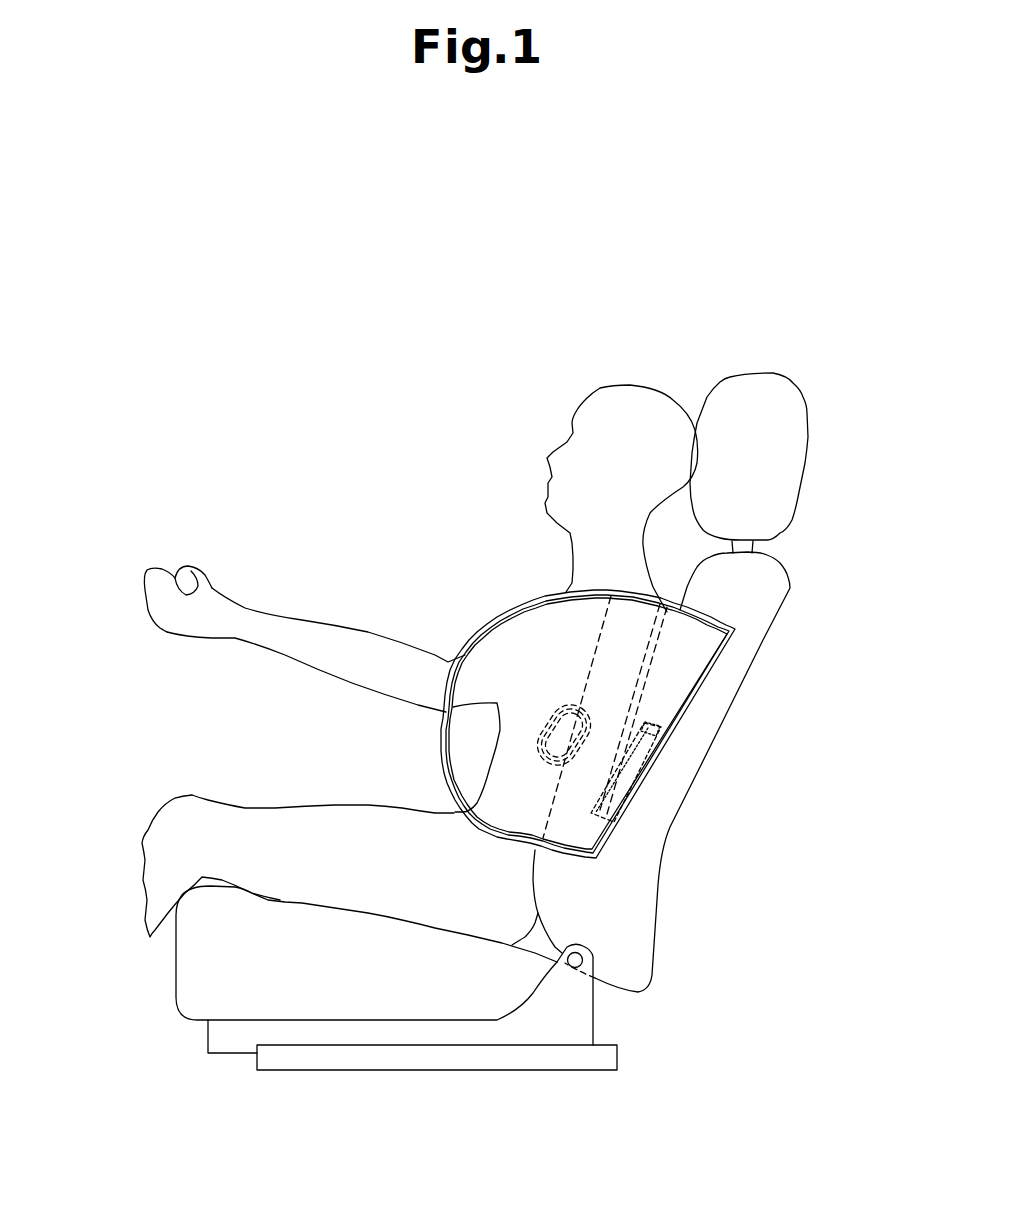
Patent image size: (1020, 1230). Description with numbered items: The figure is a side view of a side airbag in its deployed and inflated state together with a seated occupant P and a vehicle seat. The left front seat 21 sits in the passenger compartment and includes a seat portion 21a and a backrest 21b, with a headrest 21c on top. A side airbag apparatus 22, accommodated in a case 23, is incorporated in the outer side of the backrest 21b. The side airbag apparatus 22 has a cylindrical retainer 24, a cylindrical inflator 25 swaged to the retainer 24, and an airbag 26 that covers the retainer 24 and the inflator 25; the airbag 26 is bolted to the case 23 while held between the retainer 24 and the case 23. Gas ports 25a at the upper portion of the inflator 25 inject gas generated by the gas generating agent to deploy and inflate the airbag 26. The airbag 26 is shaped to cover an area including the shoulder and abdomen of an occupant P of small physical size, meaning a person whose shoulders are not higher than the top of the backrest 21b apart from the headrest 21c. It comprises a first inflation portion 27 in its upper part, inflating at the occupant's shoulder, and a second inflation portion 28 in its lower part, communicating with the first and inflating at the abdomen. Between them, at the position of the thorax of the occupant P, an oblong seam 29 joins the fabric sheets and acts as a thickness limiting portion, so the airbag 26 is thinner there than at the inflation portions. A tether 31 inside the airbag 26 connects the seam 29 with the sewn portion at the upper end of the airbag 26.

The occupant P is at (632, 388).
The front seat 21 is at (790, 580).
The seat portion 21a is at (195, 970).
The backrest 21b is at (760, 617).
The headrest 21c is at (798, 423).
The side airbag apparatus 22 is at (726, 671).
The case 23 is at (701, 688).
The retainer 24 is at (603, 842).
The inflator 25 is at (628, 783).
The gas ports 25a is at (660, 753).
The airbag 26 is at (441, 750).
The first inflation portion 27 is at (562, 632).
The second inflation portion 28 is at (512, 798).
The seam 29 is at (552, 710).
The tether 31 is at (659, 630).